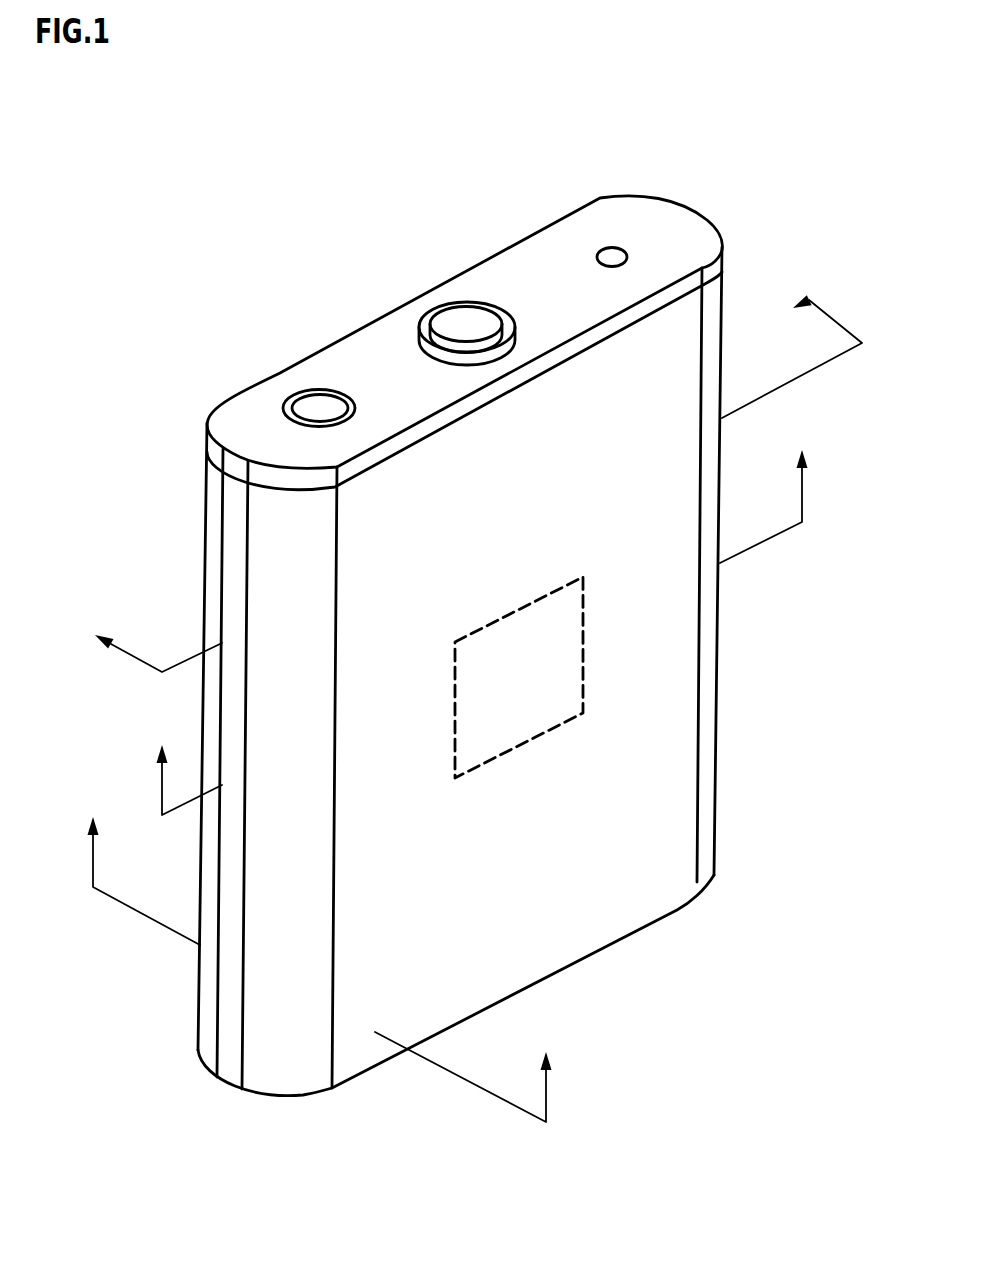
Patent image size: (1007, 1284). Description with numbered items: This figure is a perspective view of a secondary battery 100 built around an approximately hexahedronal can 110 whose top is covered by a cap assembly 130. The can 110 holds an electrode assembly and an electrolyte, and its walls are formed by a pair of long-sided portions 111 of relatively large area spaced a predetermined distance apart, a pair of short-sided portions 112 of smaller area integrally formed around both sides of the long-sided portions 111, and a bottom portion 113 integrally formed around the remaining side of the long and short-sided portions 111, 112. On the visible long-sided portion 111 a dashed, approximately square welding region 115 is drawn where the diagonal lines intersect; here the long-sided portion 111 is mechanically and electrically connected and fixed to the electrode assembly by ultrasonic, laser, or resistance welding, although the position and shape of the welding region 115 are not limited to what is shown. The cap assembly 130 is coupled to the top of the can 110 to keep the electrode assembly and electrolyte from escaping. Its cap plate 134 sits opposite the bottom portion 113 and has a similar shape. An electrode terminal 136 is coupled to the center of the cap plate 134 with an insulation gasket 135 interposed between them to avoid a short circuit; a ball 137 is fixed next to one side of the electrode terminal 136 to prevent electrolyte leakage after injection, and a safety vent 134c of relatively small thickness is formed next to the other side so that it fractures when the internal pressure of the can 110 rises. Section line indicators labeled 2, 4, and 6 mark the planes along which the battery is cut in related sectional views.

The secondary battery 100 is at (276, 209).
The can 110 is at (737, 718).
The long-sided portions 111 is at (642, 908).
The short-sided portions 112 is at (227, 1022).
The bottom portion 113 is at (595, 950).
The welding region 115 is at (523, 717).
The cap assembly 130 is at (744, 210).
The cap plate 134 is at (640, 210).
The safety vent 134c is at (313, 405).
The insulation gasket 135 is at (423, 327).
The electrode terminal 136 is at (467, 313).
The ball 137 is at (612, 252).
The section line 2- 2 is at (482, 615).
The section line 4- 4 is at (319, 952).
The section line 6- 6 is at (470, 473).